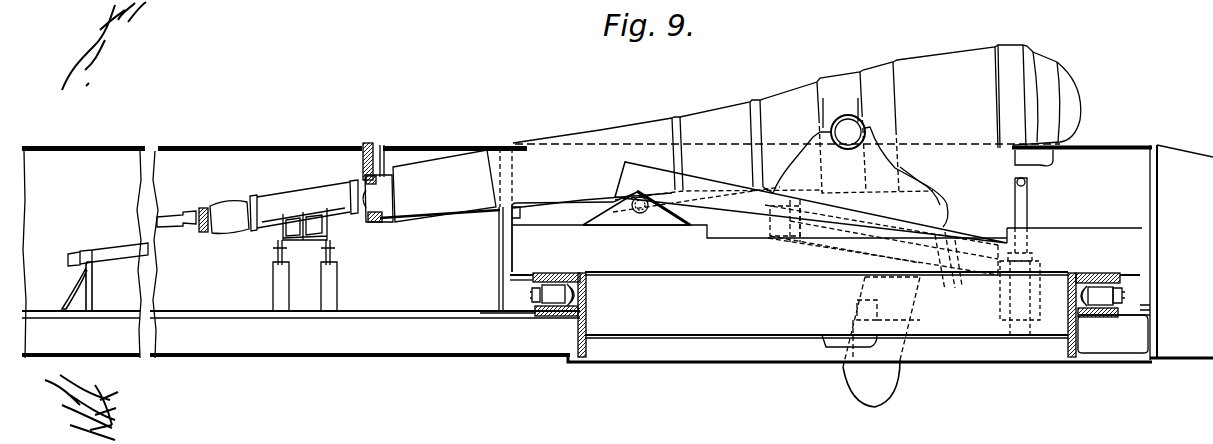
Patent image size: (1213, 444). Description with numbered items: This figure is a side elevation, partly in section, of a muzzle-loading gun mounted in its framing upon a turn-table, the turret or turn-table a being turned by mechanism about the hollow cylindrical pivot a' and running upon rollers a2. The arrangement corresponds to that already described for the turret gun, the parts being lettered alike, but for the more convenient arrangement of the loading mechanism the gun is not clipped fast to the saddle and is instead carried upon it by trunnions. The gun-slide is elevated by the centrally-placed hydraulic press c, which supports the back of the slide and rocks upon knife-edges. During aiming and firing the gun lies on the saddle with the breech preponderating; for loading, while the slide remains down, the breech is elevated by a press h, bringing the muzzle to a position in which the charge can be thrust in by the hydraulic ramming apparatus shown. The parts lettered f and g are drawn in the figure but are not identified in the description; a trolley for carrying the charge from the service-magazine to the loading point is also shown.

The turret a is at (864, 315).
The hollow cylindrical pivot a' is at (826, 305).
The rollers a2 is at (810, 295).
The hydraulic press c is at (871, 342).
The small gun f is at (105, 272).
The support bracket g is at (309, 259).
The press h is at (1020, 256).